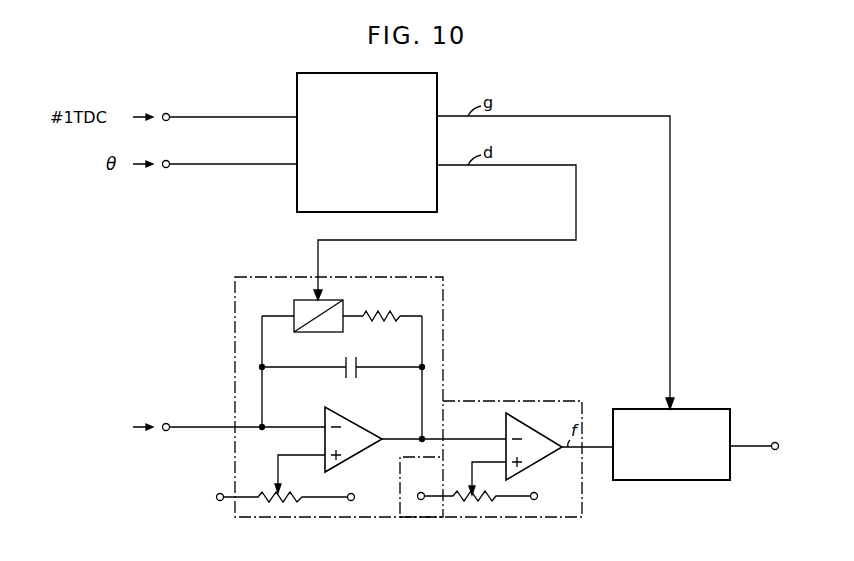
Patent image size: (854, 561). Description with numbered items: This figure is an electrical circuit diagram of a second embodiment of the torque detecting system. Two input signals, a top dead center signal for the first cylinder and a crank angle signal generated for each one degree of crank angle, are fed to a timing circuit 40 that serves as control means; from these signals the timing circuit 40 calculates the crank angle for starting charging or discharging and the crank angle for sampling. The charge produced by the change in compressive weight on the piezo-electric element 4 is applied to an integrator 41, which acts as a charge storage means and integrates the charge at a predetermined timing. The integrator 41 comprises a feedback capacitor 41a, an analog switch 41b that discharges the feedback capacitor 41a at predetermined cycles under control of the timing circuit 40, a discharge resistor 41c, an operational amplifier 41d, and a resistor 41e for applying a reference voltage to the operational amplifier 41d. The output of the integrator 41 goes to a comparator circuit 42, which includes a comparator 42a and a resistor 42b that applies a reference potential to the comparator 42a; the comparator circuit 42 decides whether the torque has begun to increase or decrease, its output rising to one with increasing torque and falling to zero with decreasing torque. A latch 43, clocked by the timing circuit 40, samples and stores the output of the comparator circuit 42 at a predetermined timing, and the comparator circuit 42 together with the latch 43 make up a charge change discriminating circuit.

The piezo-electric element 4 is at (218, 427).
The timing circuit 40 is at (297, 84).
The integrator 41 is at (443, 347).
The feedback capacitor 41a is at (352, 363).
The analog switch 41b is at (294, 305).
The discharge resistor 41c is at (383, 312).
The operational amplifier 41d is at (362, 428).
The resistor 41e is at (296, 488).
The comparator circuit 42 is at (470, 400).
The comparator 42a is at (548, 425).
The resistor 42b is at (466, 491).
The latch 43 is at (668, 482).